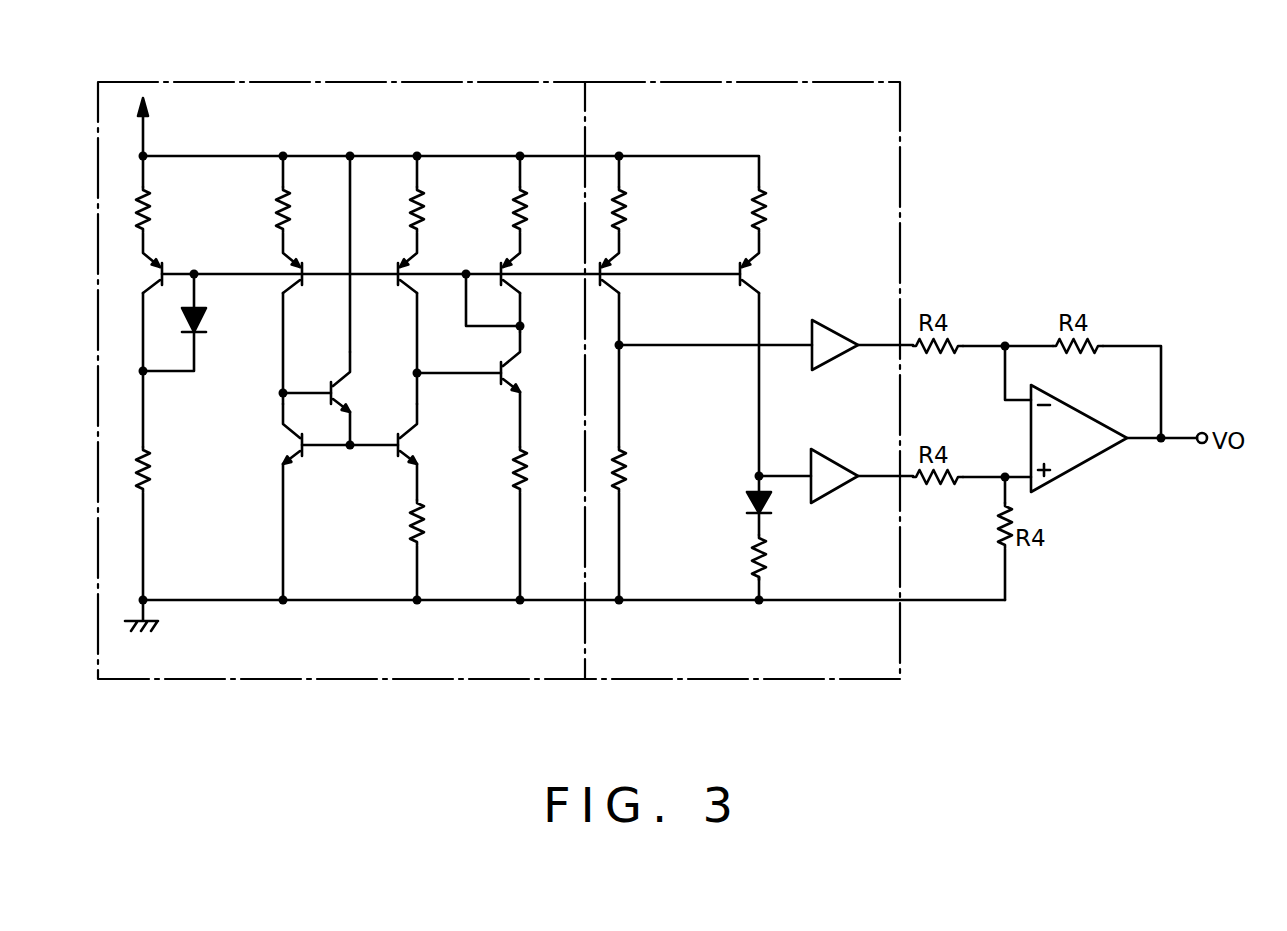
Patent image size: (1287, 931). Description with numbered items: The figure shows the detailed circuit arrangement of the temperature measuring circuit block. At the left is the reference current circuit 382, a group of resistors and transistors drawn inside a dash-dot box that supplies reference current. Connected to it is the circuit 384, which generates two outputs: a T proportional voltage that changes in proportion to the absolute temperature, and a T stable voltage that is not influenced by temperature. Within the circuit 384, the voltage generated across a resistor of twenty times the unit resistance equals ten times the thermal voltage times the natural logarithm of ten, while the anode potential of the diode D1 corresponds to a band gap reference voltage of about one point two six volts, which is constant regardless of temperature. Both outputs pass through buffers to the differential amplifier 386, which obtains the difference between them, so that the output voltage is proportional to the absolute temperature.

The reference current circuit 382 is at (282, 82).
The circuit for generating T proportional and T stable voltage outputs 384 is at (752, 82).
The differential amplifier 386 is at (1072, 463).
The diode D1 is at (745, 502).